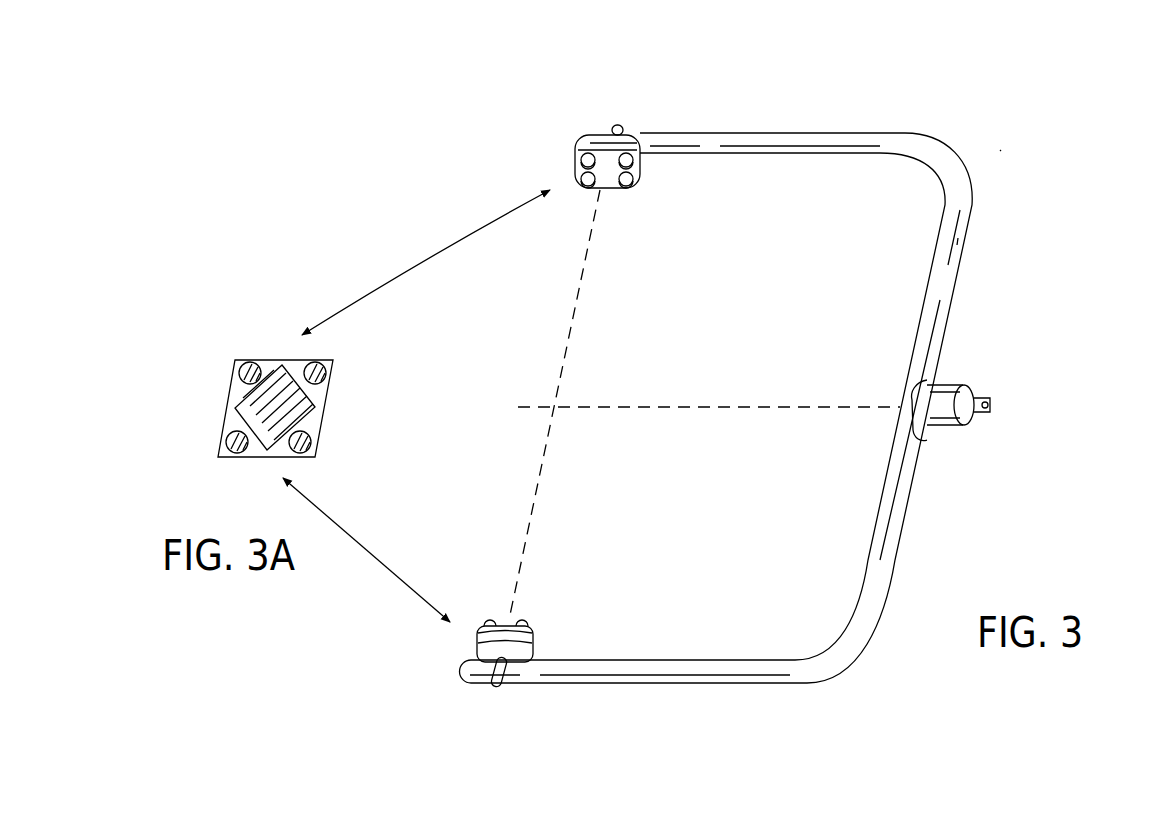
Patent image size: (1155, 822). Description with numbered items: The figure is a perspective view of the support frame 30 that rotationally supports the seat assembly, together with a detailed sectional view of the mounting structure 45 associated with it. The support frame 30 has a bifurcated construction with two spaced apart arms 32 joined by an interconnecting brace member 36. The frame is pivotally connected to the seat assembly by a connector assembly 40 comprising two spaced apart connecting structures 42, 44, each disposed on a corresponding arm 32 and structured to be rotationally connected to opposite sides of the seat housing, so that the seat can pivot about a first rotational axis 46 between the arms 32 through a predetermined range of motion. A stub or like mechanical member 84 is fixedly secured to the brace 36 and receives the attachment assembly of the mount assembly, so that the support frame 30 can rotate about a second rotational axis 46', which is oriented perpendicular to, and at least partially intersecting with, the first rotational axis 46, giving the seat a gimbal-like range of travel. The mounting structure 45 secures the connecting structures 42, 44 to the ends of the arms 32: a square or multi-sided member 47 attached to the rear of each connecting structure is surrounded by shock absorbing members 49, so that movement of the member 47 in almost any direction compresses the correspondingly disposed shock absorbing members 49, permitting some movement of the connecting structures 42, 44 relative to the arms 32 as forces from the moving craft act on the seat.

In FIG. 3, the support frame 30 is at (1004, 150).
In FIG. 3, the arm 32 is at (840, 132).
In FIG. 3, the brace member 36 is at (958, 238).
In FIG. 3, the connector assembly 40 is at (556, 136).
In FIG. 3, the connecting structure 42 is at (535, 642).
In FIG. 3, the connecting structure 44 is at (642, 172).
In FIG. 3, the mounting structure 45 is at (632, 123).
In FIG. 3A, the mounting structure 45 is at (195, 351).
In FIG. 3, the first rotational axis 46 is at (517, 402).
In FIG. 3, the second rotational axis 46' is at (709, 360).
In FIG. 3A, the multi-sided member 47 is at (253, 402).
In FIG. 3A, the shock absorbing members 49 is at (250, 362).
In FIG. 3, the mechanical member 84 is at (993, 399).